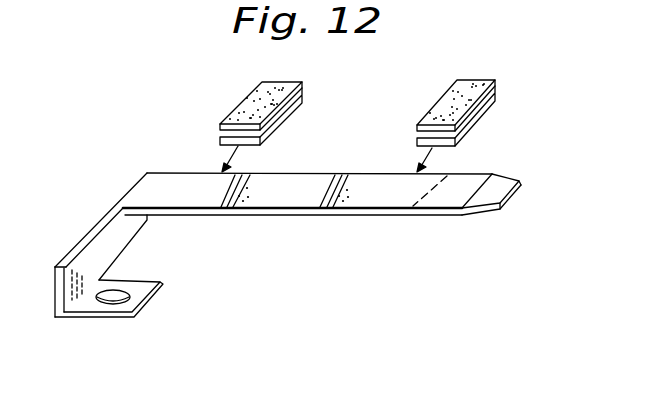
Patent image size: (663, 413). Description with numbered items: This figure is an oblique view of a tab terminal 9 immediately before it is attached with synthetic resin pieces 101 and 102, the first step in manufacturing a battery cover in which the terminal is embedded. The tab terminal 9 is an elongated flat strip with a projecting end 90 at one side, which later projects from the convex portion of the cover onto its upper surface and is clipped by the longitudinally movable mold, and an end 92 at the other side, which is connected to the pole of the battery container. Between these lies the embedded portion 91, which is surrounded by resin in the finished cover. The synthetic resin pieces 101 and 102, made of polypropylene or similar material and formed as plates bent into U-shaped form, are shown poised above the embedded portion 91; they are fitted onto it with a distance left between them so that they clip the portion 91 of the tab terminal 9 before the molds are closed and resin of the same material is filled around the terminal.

The tab terminal 9 is at (345, 219).
The projecting end 90 is at (468, 173).
The embedded portion 91 is at (265, 197).
The end 92 is at (157, 284).
The synthetic resin piece 101 is at (258, 100).
The synthetic resin piece 102 is at (448, 103).